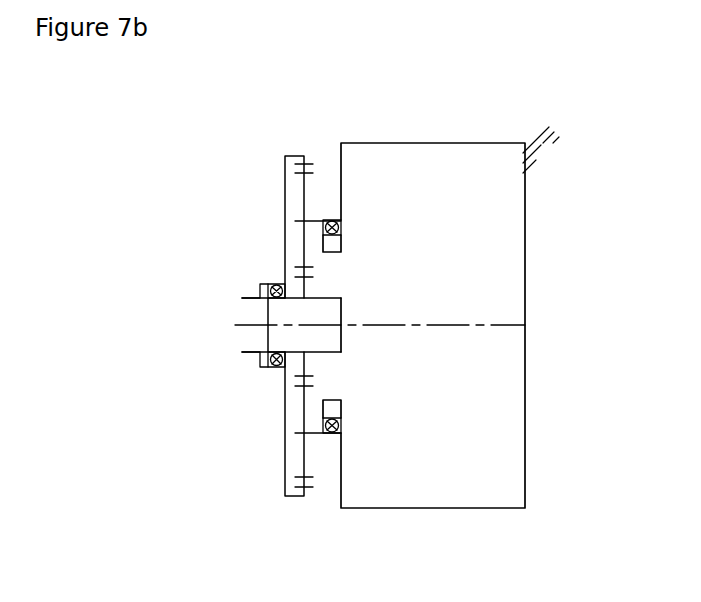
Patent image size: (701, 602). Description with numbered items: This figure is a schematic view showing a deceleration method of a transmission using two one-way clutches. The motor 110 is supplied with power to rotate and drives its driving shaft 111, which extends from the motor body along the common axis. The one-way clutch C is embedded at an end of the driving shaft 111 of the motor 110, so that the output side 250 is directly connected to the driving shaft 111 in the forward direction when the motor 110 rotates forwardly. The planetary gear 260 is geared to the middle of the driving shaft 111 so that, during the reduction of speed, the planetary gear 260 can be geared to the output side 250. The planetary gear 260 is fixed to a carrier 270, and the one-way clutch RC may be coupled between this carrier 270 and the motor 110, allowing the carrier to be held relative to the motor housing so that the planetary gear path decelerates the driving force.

The motor 110 is at (523, 238).
The driving shaft 111 is at (278, 336).
The output side 250 is at (243, 294).
The planetary gear 260 is at (305, 195).
The carrier 270 is at (322, 227).
The one-way clutch C is at (273, 369).
The one-way clutch RC is at (340, 434).